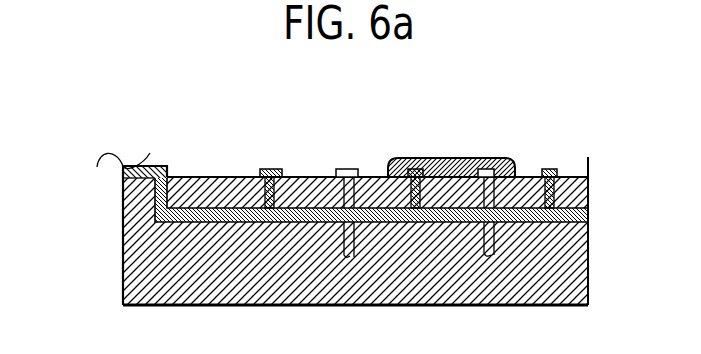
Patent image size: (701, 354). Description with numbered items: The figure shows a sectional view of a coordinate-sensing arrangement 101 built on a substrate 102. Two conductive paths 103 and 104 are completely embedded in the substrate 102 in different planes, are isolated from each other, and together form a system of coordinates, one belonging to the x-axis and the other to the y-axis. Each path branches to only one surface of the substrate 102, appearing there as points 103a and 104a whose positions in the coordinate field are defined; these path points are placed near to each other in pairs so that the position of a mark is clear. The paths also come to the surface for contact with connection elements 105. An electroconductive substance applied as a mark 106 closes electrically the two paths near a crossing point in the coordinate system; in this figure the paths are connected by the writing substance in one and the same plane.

The semiconductor device 101 is at (97, 168).
The substrate 102 is at (134, 250).
The path 103 is at (589, 212).
The point 103a is at (274, 168).
The path 104 is at (490, 249).
The point 104a is at (387, 118).
The connection element 105 is at (117, 165).
The mark 106 is at (483, 158).